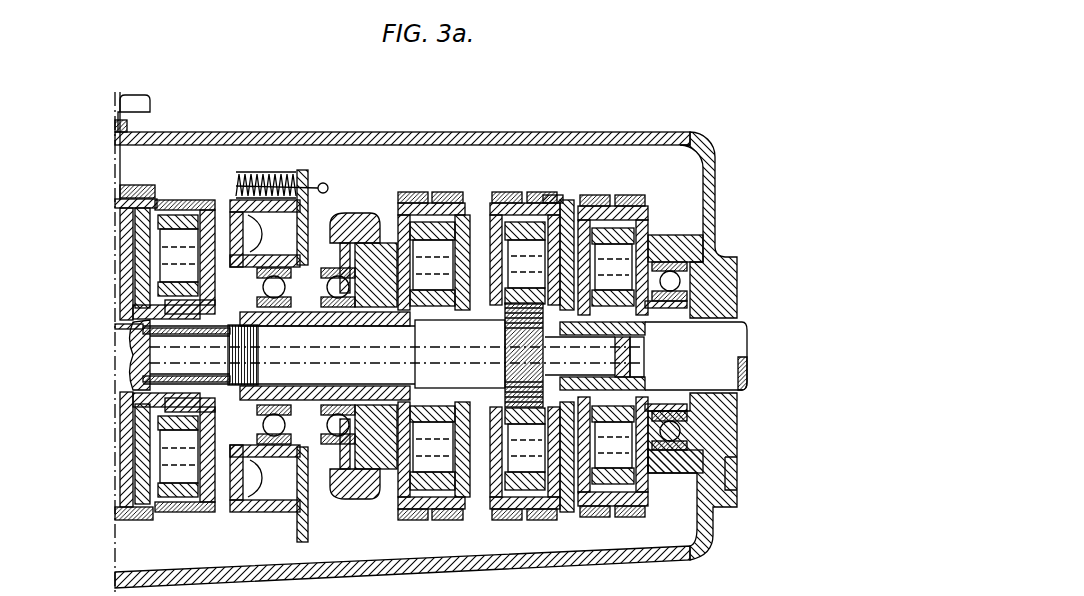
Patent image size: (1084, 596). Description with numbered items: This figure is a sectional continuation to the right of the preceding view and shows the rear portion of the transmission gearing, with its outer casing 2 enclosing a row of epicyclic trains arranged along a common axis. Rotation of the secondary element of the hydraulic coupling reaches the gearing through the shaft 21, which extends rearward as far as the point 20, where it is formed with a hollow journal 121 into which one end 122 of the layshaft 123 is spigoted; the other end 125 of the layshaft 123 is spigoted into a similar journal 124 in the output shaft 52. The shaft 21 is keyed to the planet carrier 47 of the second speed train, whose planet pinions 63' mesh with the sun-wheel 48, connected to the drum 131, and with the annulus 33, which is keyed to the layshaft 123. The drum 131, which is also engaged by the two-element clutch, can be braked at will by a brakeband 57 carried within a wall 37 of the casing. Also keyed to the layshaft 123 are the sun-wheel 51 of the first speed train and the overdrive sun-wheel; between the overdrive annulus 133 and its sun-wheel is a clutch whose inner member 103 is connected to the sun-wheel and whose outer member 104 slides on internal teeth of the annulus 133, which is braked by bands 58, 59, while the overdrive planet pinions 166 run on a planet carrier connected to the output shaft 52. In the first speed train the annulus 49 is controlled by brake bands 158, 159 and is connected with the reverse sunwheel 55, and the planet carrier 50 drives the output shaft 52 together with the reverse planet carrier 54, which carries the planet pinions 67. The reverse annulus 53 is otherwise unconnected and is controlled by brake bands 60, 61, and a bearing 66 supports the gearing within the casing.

The housing 2 is at (204, 138).
The point 20 is at (180, 358).
The shaft 21 is at (118, 328).
The annulus 33 is at (197, 212).
The housing wall 37 is at (118, 237).
The planet carrier 47 is at (150, 288).
The sun-wheel 48 is at (137, 328).
The annulus 49 is at (550, 195).
The planet carrier 50 is at (568, 202).
The sun-wheel 51 is at (512, 370).
The output shaft 52 is at (708, 352).
The annulus 53 is at (637, 206).
The planet carrier 54 is at (700, 292).
The sunwheel 55 is at (676, 303).
The brakeband 57 is at (133, 187).
The brake band 58 is at (418, 192).
The brake band 59 is at (450, 212).
The brake band 60 is at (594, 195).
The brake band 61 is at (624, 195).
The planet pinions 63' is at (181, 331).
The gear assembly 66 is at (510, 212).
The planet pinions 67 is at (625, 275).
The inner clutch member 103 is at (368, 213).
The outer clutch member 104 is at (341, 243).
The hollow journal 121 is at (150, 348).
The layshaft end 122 is at (118, 393).
The layshaft 123 is at (288, 372).
The journal 124 is at (590, 376).
The layshaft end 125 is at (587, 355).
The drum 131 is at (115, 207).
The annulus 133 is at (436, 192).
The brake band 158 is at (497, 192).
The brake band 159 is at (550, 192).
The planet pinions 166 is at (398, 195).